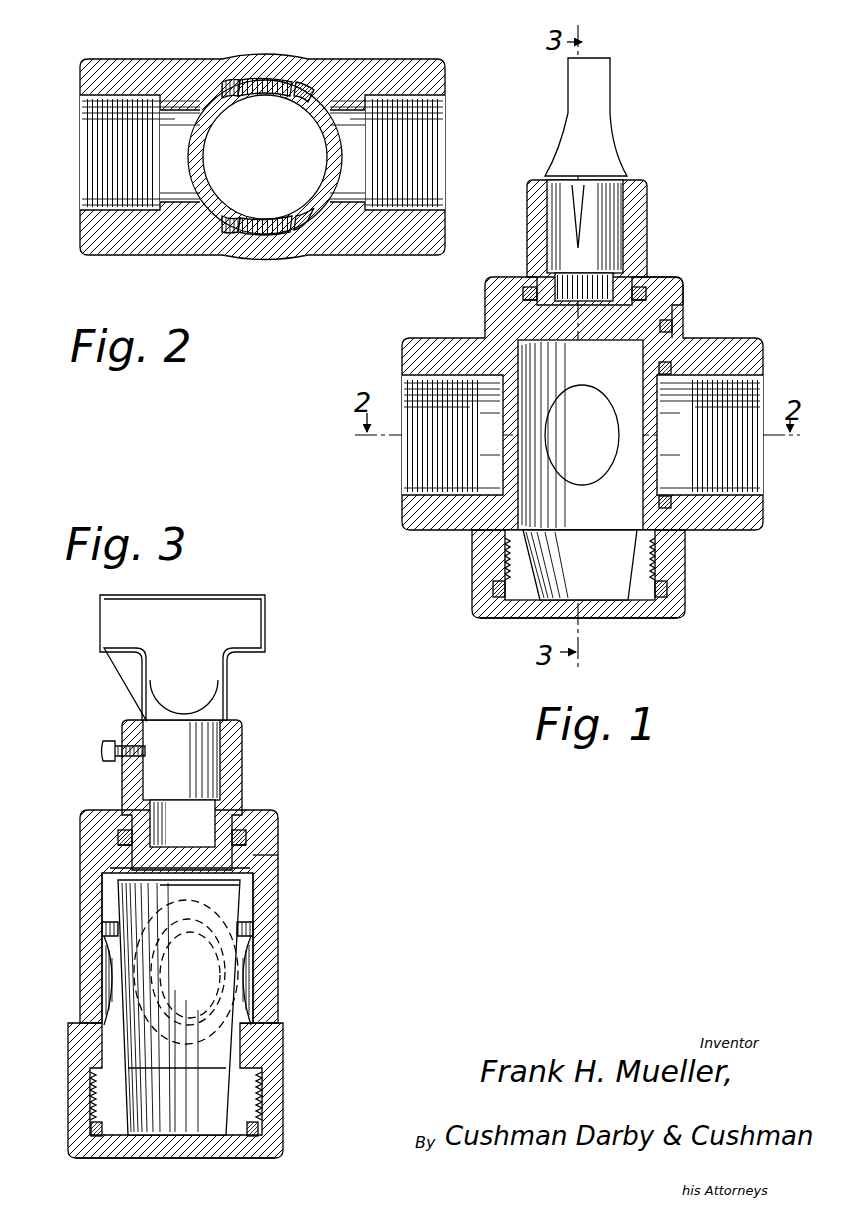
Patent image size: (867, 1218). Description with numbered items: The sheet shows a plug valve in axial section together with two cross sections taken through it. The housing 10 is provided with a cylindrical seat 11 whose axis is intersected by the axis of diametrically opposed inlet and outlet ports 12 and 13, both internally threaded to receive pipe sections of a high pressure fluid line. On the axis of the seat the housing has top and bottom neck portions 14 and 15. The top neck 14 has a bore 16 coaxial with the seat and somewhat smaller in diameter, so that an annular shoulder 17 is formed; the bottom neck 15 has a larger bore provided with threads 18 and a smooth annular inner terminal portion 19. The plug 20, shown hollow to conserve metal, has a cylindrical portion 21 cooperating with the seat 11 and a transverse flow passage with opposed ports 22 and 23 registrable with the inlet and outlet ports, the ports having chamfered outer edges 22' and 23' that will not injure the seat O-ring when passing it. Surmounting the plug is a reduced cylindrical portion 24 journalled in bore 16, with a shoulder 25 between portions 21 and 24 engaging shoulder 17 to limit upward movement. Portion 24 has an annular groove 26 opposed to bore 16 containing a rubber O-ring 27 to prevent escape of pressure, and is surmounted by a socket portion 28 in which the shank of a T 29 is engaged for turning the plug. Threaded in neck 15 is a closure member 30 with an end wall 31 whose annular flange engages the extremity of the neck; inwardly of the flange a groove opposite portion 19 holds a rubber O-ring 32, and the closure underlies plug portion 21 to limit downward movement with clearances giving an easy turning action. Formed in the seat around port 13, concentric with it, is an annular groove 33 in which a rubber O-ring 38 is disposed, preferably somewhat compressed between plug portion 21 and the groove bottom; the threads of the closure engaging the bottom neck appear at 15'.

In FIG. 2, the housing 10 is at (384, 58).
In FIG. 1, the housing 10 is at (488, 276).
In FIG. 3, the housing 10 is at (290, 832).
In FIG. 1, the cylindrical seat 11 is at (500, 492).
In FIG. 3, the cylindrical seat 11 is at (186, 972).
In FIG. 2, the inlet port 12 is at (88, 156).
In FIG. 1, the inlet port 12 is at (412, 460).
In FIG. 2, the outlet port 13 is at (432, 166).
In FIG. 1, the outlet port 13 is at (756, 462).
In FIG. 3, the outlet port 13 is at (169, 1055).
In FIG. 1, the top neck portion 14 is at (681, 287).
In FIG. 1, the bottom neck portion 15 is at (692, 561).
In FIG. 3, the threads of bottom cap 15' is at (214, 1096).
In FIG. 1, the bore 16 is at (680, 312).
In FIG. 3, the bore 16 is at (268, 856).
In FIG. 3, the annular shoulder 17 is at (192, 912).
In FIG. 1, the threads 18 is at (490, 568).
In FIG. 1, the smooth annular inner terminal portion 19 is at (505, 600).
In FIG. 3, the smooth annular inner terminal portion 19 is at (95, 1140).
In FIG. 1, the plug 20 is at (564, 193).
In FIG. 3, the plug 20 is at (157, 732).
In FIG. 2, the cylindrical portion 21 is at (198, 164).
In FIG. 3, the cylindrical portion 21 is at (248, 906).
In FIG. 2, the port 22 is at (254, 251).
In FIG. 3, the port 22 is at (284, 980).
In FIG. 2, the chamfered outer edge 22' is at (198, 250).
In FIG. 3, the chamfered outer edge 22' is at (285, 939).
In FIG. 2, the port 23 is at (286, 57).
In FIG. 1, the port 23 is at (571, 435).
In FIG. 3, the port 23 is at (133, 1007).
In FIG. 2, the chamfered outer edge 23' is at (239, 57).
In FIG. 3, the chamfered outer edge 23' is at (72, 960).
In FIG. 1, the reduced cylindrical portion 24 is at (646, 276).
In FIG. 3, the reduced cylindrical portion 24 is at (182, 823).
In FIG. 1, the shoulder 25 is at (664, 321).
In FIG. 3, the shoulder 25 is at (118, 866).
In FIG. 1, the annular groove 26 is at (530, 300).
In FIG. 3, the annular groove 26 is at (124, 838).
In FIG. 1, the rubber O-ring 27 is at (524, 293).
In FIG. 3, the rubber O-ring 27 is at (236, 830).
In FIG. 1, the socket portion 28 is at (648, 202).
In FIG. 3, the socket portion 28 is at (242, 779).
In FIG. 1, the T 29 is at (606, 131).
In FIG. 3, the T 29 is at (228, 690).
In FIG. 1, the closure member 30 is at (575, 595).
In FIG. 3, the closure member 30 is at (203, 1032).
In FIG. 1, the end wall 31 is at (620, 606).
In FIG. 3, the end wall 31 is at (170, 1152).
In FIG. 1, the rubber O-ring 32 is at (648, 590).
In FIG. 3, the rubber O-ring 32 is at (246, 1126).
In FIG. 2, the annular groove 33 is at (305, 230).
In FIG. 3, the annular groove 33 is at (214, 1050).
In FIG. 2, the rubber O-ring 38 is at (312, 214).
In FIG. 1, the rubber O-ring 38 is at (722, 352).